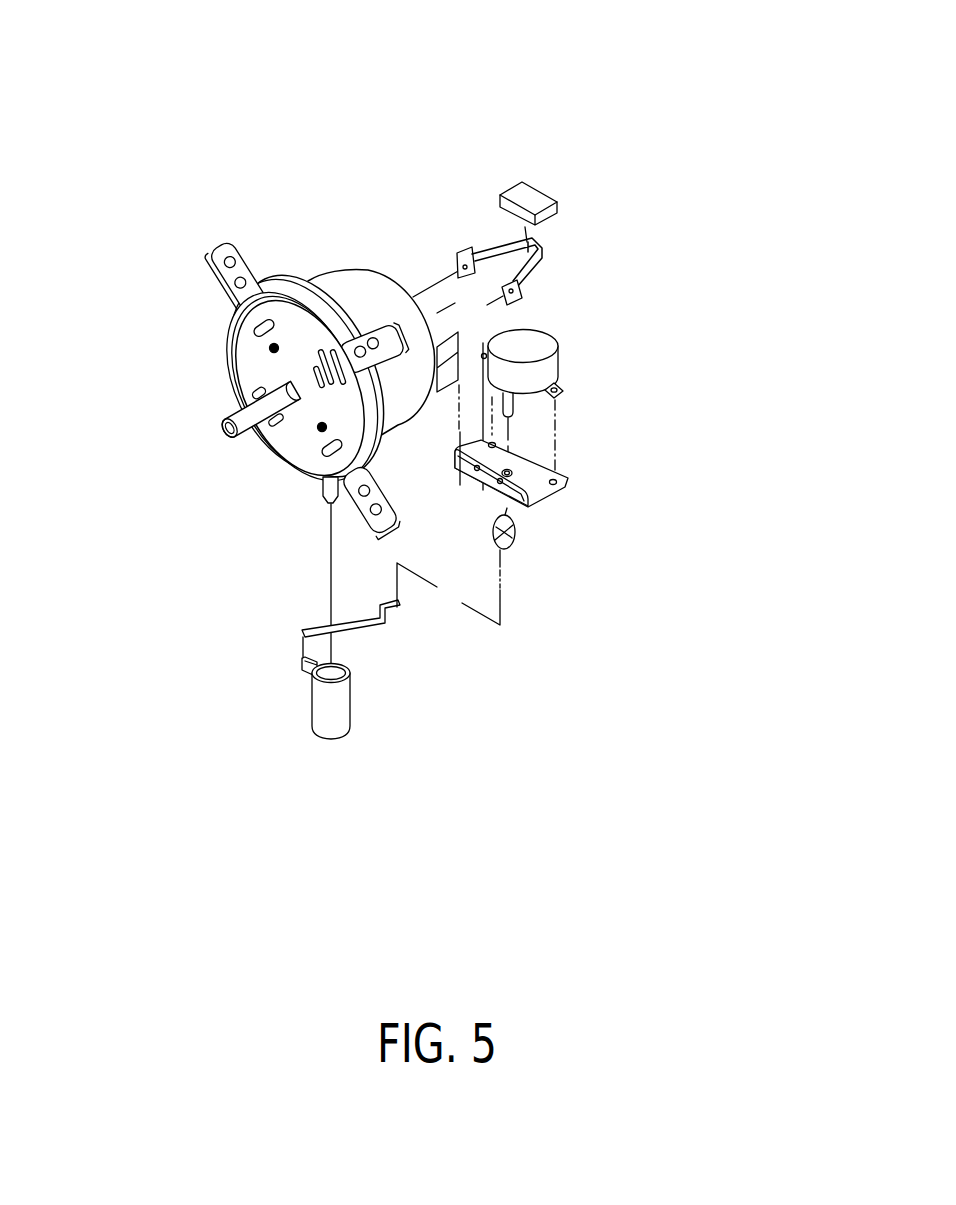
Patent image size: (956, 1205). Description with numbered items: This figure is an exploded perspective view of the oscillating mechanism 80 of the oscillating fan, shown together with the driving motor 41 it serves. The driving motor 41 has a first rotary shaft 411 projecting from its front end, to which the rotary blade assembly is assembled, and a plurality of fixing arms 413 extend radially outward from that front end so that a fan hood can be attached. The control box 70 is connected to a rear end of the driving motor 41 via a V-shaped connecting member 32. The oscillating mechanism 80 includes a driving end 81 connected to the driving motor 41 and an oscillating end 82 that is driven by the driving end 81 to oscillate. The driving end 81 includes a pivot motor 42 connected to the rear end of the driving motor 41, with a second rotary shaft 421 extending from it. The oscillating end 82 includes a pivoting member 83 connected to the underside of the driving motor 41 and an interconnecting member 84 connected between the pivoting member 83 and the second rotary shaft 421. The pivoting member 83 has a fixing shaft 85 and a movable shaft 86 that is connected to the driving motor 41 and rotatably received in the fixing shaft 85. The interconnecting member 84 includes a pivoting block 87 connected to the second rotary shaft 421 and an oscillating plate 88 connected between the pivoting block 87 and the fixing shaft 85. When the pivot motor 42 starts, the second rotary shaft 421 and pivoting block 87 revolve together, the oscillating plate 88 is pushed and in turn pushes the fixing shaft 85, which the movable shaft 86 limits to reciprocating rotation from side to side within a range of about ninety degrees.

The V-shaped connecting member 32 is at (488, 252).
The driving motor 41 is at (312, 262).
The pivot motor 42 is at (543, 330).
The control box 70 is at (517, 180).
The oscillating mechanism 80 is at (700, 718).
The driving end 81 is at (582, 328).
The oscillating end 82 is at (133, 503).
The pivoting member 83 is at (300, 532).
The interconnecting member 84 is at (425, 628).
The fixing shaft 85 is at (330, 740).
The movable shaft 86 is at (320, 490).
The pivoting block 87 is at (515, 540).
The oscillating plate 88 is at (379, 624).
The first rotary shaft 411 is at (222, 405).
The fixing arms 413 is at (220, 245).
The second rotary shaft 421 is at (560, 398).